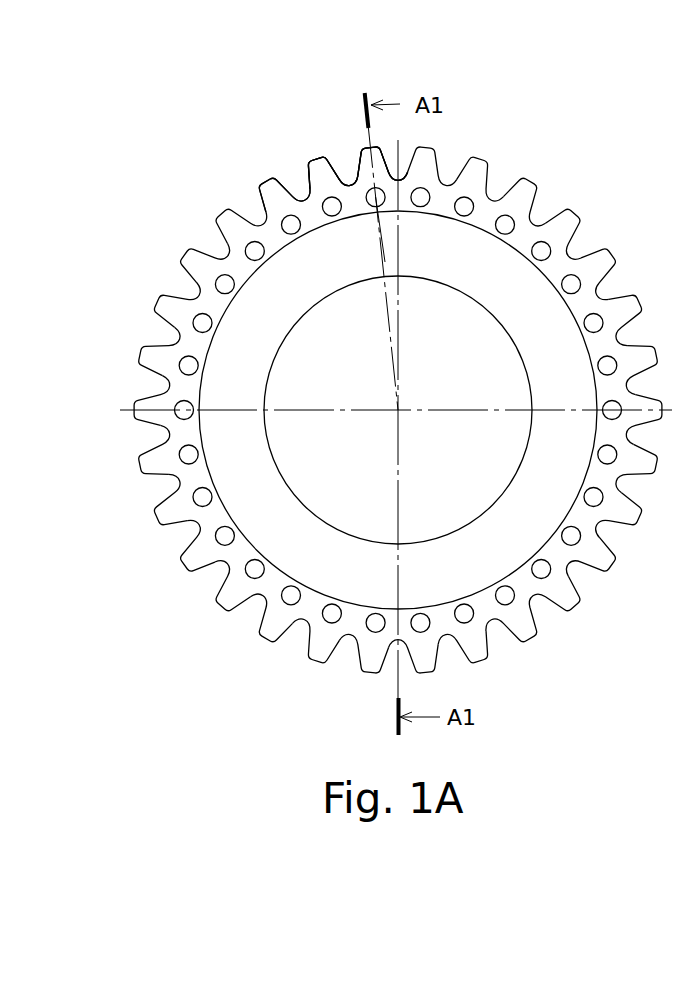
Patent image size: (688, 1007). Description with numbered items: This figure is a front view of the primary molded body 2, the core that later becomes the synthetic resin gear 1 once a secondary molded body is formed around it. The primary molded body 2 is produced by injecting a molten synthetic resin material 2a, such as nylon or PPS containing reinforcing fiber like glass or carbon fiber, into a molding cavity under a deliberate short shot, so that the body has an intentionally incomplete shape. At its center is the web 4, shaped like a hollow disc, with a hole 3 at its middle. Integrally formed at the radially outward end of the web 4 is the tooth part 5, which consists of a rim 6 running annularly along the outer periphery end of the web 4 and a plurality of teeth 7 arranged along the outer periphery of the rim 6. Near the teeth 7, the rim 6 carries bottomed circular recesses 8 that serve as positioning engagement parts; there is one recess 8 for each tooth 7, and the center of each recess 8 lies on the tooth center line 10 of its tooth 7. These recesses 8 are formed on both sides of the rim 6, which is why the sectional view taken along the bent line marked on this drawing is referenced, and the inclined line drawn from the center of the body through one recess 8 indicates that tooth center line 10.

The primary molded body 2 is at (398, 395).
The molten synthetic resin material 2a is at (398, 410).
The synthetic resin gear 1 is at (535, 179).
The tooth part 5 is at (323, 80).
The rim 6 is at (313, 215).
The teeth 7 is at (320, 165).
The bottomed circular recesses 8 is at (377, 197).
The tooth center line 10 is at (385, 258).
The hole 3 is at (520, 358).
The web 4 is at (267, 492).